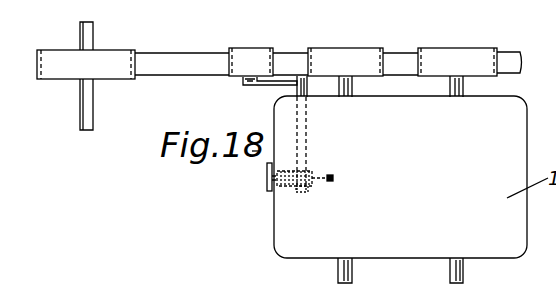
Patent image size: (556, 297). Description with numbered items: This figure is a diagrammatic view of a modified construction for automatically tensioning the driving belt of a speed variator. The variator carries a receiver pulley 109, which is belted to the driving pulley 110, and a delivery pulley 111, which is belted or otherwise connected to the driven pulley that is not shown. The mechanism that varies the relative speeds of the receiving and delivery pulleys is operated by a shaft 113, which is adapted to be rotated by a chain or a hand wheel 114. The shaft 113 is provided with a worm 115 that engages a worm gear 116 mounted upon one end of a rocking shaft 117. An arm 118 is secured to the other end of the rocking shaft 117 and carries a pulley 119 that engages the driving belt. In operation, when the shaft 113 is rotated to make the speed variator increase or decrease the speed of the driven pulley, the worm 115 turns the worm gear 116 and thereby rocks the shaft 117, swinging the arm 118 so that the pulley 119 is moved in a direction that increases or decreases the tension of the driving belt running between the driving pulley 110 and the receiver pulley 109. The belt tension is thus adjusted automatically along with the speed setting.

The receiver pulley 109 is at (357, 48).
The driving pulley 110 is at (120, 49).
The delivery pulley 111 is at (432, 48).
The shaft 113 is at (276, 183).
The hand wheel 114 is at (266, 181).
The worm 115 is at (312, 170).
The worm gear 116 is at (318, 186).
The rocking shaft 117 is at (309, 132).
The arm 118 is at (244, 87).
The pulley 119 is at (247, 48).